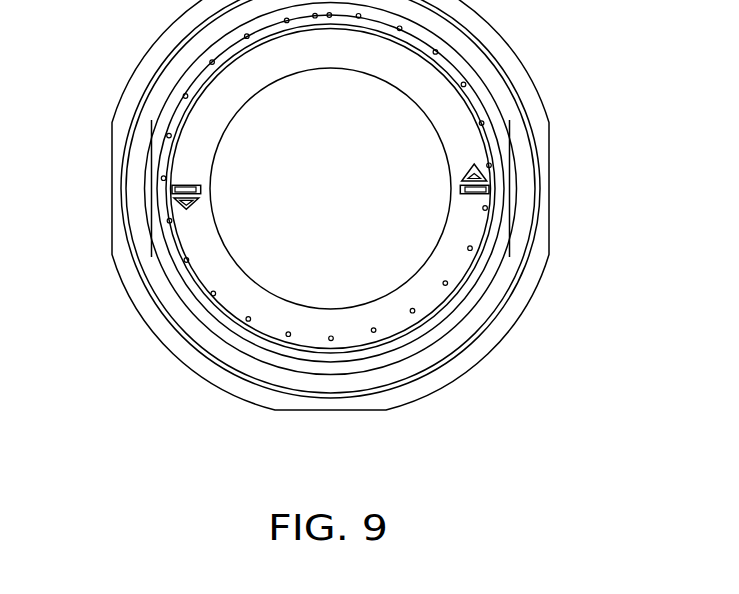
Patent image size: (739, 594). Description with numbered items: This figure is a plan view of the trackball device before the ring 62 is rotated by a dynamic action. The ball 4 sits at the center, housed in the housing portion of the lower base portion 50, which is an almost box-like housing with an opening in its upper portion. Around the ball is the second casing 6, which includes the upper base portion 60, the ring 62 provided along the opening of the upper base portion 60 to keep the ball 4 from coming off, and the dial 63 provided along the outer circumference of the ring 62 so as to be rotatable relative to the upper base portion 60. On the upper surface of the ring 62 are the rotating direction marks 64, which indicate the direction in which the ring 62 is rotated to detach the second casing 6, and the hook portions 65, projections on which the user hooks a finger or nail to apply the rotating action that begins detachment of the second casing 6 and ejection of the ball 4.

The ball 4 is at (273, 150).
The second casing 6 is at (620, 22).
The lower base portion 50 is at (394, 401).
The upper base portion 60 is at (498, 88).
The ring 62 is at (437, 100).
The dial 63 is at (495, 118).
The rotating direction marks 64 is at (186, 209).
The hook portions 65 is at (186, 185).